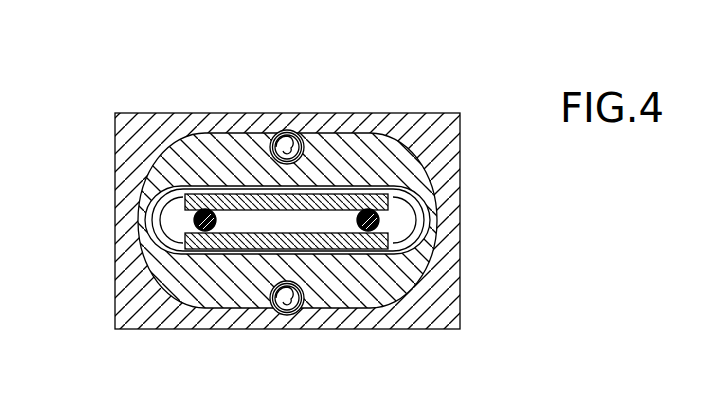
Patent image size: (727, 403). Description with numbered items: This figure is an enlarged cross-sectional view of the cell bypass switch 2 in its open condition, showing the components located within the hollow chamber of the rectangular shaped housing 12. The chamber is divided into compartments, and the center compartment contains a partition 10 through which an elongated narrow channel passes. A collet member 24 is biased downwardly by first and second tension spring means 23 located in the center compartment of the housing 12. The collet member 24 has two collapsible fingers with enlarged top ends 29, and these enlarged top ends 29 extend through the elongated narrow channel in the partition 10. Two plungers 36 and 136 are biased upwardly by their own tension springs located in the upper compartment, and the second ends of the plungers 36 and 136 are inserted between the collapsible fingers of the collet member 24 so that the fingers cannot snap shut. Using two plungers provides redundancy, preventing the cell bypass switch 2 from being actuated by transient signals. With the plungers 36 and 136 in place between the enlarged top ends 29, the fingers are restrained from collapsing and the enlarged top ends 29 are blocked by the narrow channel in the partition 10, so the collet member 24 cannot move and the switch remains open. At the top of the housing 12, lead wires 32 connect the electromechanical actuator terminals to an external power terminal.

The cell bypass switch 2 is at (309, 207).
The partition 10 is at (340, 155).
The housing 12 is at (470, 212).
The first and second tension spring means 23 is at (292, 136).
The collet member 24 is at (278, 217).
The enlarged top ends 29 is at (220, 190).
The lead wires 32 is at (42, 394).
The plunger 36 is at (192, 192).
The plunger 136 is at (380, 222).